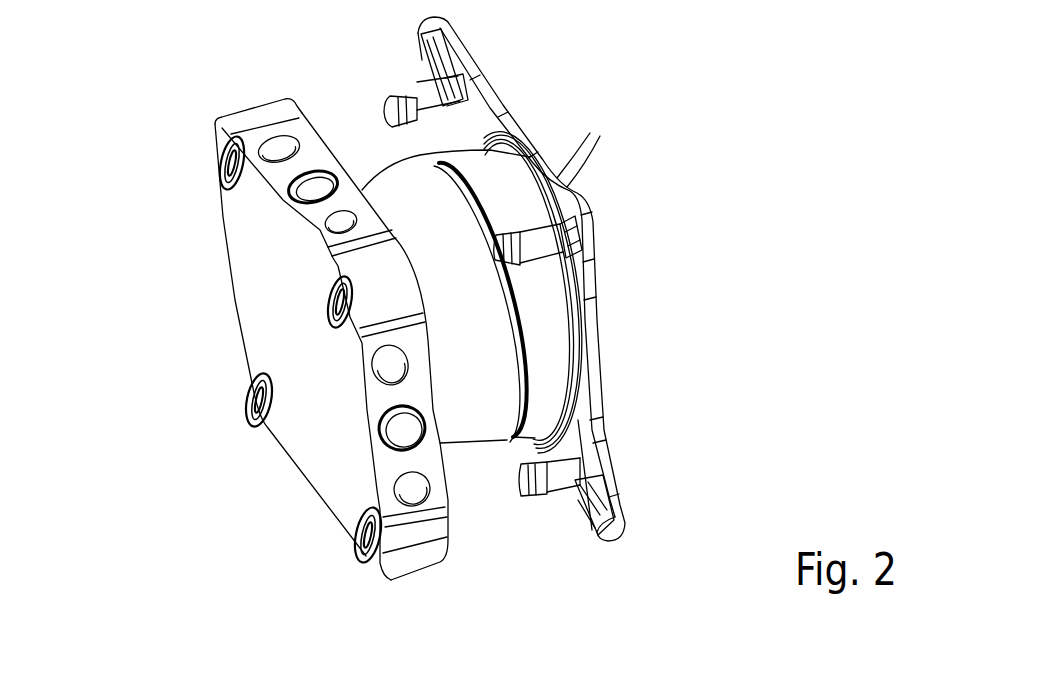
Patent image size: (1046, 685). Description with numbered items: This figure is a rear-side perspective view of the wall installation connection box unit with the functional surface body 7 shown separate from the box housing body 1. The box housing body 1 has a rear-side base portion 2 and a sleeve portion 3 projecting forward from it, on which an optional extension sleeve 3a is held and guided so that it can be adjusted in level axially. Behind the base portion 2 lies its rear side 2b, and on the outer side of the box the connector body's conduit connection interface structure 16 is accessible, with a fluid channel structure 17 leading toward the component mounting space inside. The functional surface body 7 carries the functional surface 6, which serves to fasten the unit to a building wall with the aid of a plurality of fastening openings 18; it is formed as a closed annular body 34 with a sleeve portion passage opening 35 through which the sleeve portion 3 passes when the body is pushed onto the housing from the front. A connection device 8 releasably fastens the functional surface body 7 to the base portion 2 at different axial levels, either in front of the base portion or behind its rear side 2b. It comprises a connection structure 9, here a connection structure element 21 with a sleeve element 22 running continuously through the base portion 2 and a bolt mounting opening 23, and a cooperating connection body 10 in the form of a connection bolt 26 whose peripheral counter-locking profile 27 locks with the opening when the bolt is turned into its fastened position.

The box housing body 1 is at (353, 173).
The base portion 2 is at (242, 118).
The rear side 2b is at (257, 203).
The sleeve portion 3 is at (463, 437).
The extension sleeve 3a is at (550, 377).
The functional surface 6 is at (482, 102).
The functional surface body 7 is at (595, 338).
The connection device 8 is at (553, 483).
The connection structure 9 is at (221, 150).
The connection body 10 is at (420, 90).
The conduit connection interface structure 16 is at (289, 194).
The fluid channel structure 17 is at (317, 187).
The fastening openings 18 is at (588, 152).
The connection structure element 21 is at (229, 355).
The sleeve element 22 is at (222, 158).
The bolt mounting opening 23 is at (222, 174).
The connection bolt 26 is at (516, 289).
The counter-locking profile 27 is at (413, 121).
The annular body 34 is at (585, 288).
The sleeve portion passage opening 35 is at (485, 150).